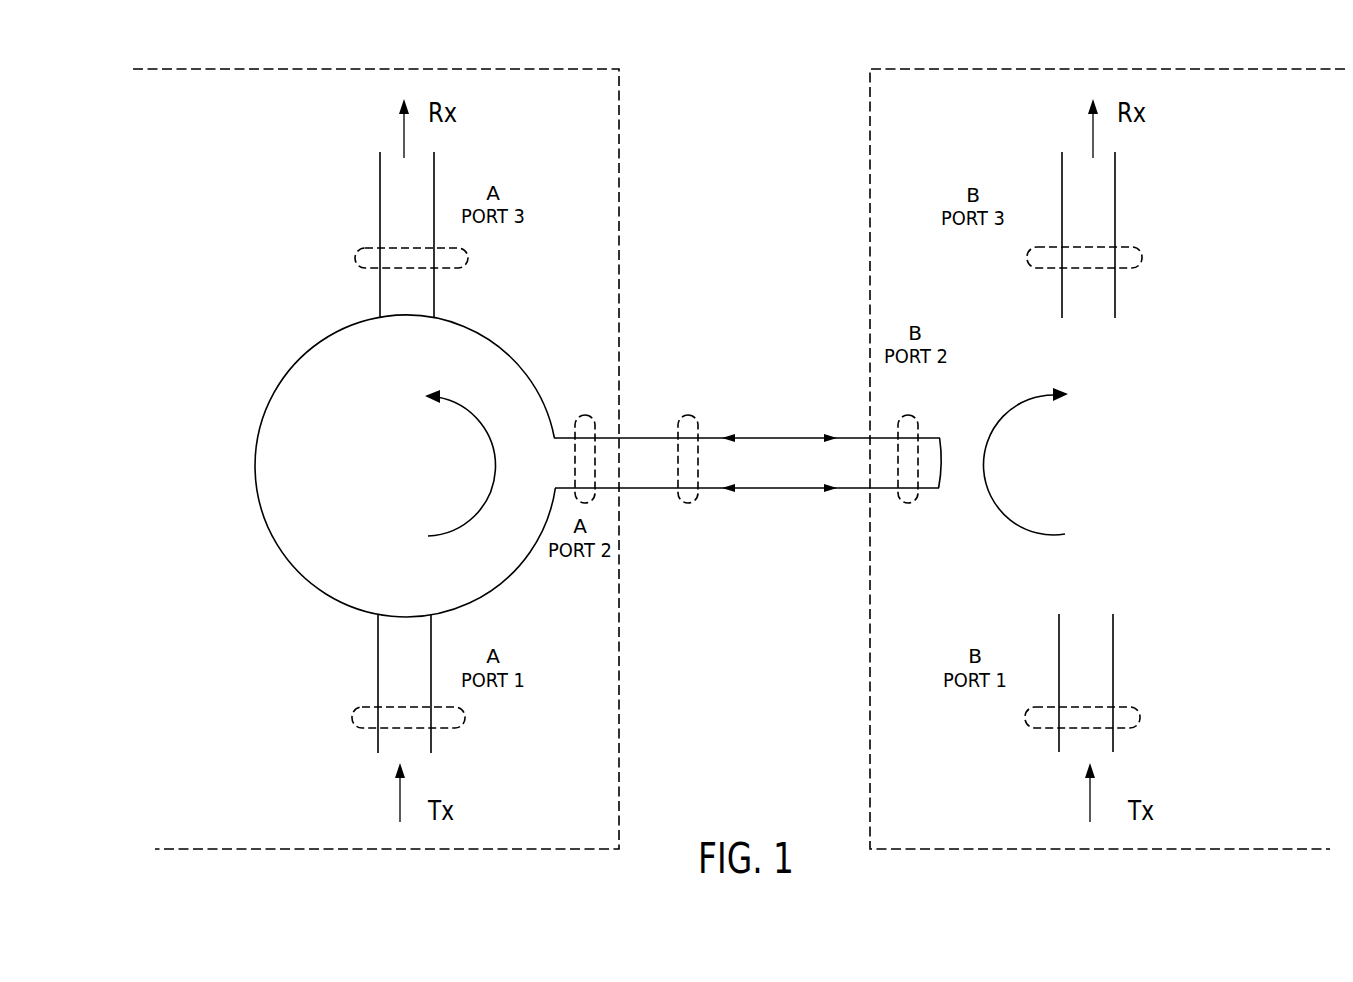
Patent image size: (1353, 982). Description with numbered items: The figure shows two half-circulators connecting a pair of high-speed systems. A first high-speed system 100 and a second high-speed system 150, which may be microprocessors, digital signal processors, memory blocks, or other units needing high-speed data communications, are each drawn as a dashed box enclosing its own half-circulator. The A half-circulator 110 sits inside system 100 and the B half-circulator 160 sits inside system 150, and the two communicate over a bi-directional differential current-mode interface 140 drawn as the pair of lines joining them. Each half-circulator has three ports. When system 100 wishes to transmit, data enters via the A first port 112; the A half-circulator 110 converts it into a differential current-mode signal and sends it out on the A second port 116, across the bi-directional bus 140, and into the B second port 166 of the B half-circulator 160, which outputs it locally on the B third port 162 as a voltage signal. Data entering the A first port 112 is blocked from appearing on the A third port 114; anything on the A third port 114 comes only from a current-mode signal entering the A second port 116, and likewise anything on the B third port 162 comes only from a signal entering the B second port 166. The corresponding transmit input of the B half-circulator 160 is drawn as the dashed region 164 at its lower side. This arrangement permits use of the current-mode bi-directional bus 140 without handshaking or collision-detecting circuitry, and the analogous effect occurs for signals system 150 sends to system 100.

The high-speed system 100 is at (619, 812).
The A half-circulator 110 is at (293, 566).
The A port 1 112 is at (355, 715).
The A port 3 114 is at (357, 254).
The A port 2 116 is at (585, 412).
The bi-directional differential current-mode interface 140 is at (690, 507).
The high-speed system 150 is at (870, 810).
The B half-circulator 160 is at (1200, 566).
The B port 3 162 is at (1143, 255).
The port 1 of circulator B 164 is at (1140, 717).
The B port 2 166 is at (908, 507).